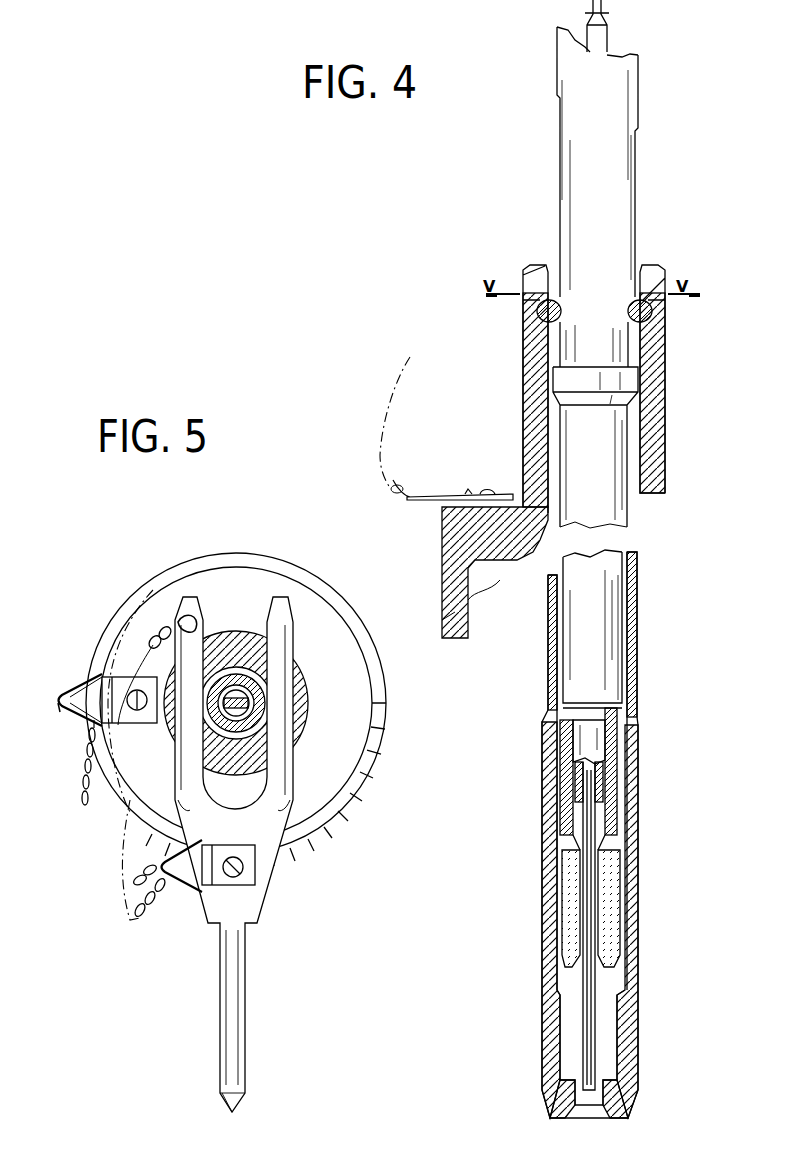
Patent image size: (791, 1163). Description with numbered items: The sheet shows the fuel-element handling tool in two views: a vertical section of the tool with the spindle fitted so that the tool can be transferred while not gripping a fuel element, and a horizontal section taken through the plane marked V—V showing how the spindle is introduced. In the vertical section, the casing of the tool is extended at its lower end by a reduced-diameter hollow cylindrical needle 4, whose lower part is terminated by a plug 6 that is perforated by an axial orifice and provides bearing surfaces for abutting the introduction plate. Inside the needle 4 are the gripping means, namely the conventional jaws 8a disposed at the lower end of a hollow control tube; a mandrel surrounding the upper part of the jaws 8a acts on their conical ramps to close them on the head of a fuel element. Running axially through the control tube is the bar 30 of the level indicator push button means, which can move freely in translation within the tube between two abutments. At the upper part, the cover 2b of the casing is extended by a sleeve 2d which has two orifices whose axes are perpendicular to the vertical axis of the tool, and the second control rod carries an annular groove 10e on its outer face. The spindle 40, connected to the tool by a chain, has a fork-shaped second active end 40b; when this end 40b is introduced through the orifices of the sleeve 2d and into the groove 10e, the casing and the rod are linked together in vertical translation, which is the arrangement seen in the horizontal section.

In FIG. 4, the hollow cylindrical needle 4 is at (637, 620).
In FIG. 4, the plug 6 is at (548, 1010).
In FIG. 4, the jaws 8a is at (575, 898).
In FIG. 4, the bar 30 is at (588, 1053).
In FIG. 5, the spindle 40 is at (276, 910).
In FIG. 4, the second active end 40b is at (540, 310).
In FIG. 5, the second active end 40b is at (190, 608).
In FIG. 4, the annular groove 10e is at (556, 340).
In FIG. 5, the annular groove 10e is at (235, 672).
In FIG. 4, the cover 2b is at (452, 515).
In FIG. 4, the sleeve 2d is at (655, 425).
In FIG. 5, the sleeve 2d is at (300, 725).